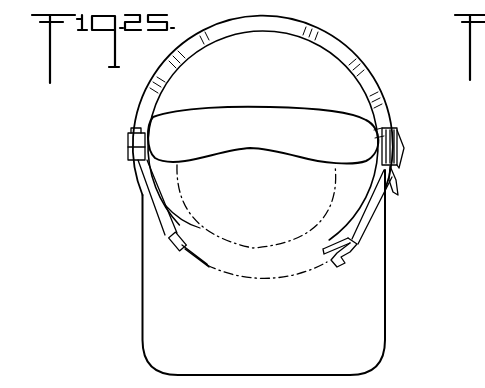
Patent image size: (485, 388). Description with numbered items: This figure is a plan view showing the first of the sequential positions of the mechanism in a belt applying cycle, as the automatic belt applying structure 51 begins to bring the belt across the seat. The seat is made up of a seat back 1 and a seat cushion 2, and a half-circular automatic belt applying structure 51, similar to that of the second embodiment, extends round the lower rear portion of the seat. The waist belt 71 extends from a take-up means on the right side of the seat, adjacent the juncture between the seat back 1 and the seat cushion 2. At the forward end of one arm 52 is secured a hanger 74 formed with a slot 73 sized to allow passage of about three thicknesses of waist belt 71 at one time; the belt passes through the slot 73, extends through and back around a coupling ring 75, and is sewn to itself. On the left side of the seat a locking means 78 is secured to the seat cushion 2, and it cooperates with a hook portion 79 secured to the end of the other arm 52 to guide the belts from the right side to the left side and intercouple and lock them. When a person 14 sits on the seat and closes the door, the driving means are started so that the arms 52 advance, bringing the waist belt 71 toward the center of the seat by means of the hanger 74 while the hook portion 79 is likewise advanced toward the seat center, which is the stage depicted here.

The seat back 1 is at (254, 107).
The seat cushion 2 is at (147, 280).
The person 14 is at (180, 167).
The automatic belt applying structure 51 is at (346, 53).
The arm 52 is at (143, 197).
The waist belt 71 is at (170, 218).
The slot 73 is at (128, 140).
The hanger 74 is at (173, 255).
The coupling ring 75 is at (201, 267).
The locking means 78 is at (404, 160).
The hook portion 79 is at (342, 272).